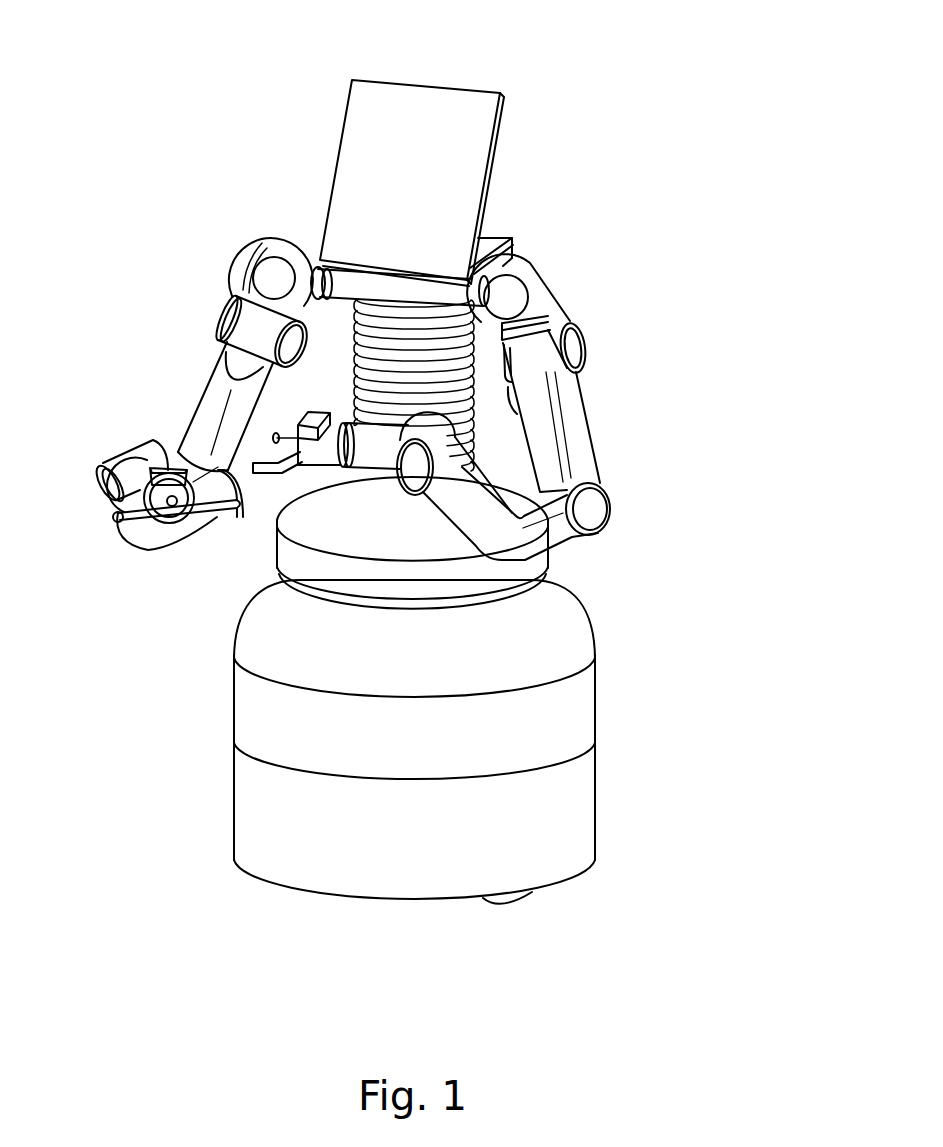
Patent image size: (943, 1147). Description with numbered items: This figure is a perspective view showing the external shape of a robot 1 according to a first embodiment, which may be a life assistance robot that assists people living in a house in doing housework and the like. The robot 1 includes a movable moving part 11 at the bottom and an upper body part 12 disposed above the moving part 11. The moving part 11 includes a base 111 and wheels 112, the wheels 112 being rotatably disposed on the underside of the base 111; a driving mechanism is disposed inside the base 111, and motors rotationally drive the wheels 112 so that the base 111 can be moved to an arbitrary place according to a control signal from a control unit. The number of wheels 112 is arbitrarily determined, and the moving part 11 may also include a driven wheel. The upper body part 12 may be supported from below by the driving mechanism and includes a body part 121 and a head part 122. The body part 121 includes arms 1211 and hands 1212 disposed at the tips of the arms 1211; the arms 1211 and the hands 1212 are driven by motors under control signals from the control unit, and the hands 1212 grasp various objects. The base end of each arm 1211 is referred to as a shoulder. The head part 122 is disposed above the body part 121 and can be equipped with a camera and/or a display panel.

The robot 1 is at (63, 33).
The moving part 11 is at (740, 795).
The base 111 is at (595, 792).
The wheels 112 is at (515, 904).
The upper body part 12 is at (702, 403).
The body part 121 is at (476, 393).
The arms 1211 is at (583, 425).
The hands 1212 is at (305, 410).
The head part 122 is at (499, 125).